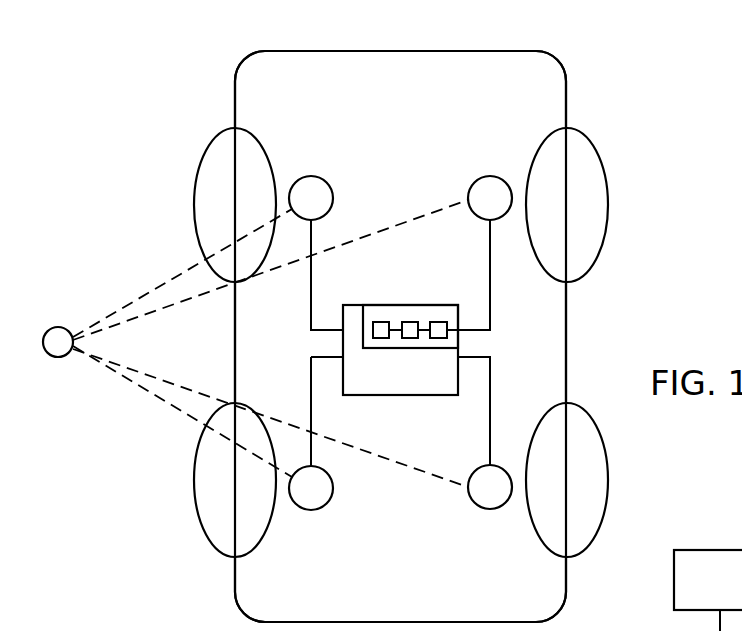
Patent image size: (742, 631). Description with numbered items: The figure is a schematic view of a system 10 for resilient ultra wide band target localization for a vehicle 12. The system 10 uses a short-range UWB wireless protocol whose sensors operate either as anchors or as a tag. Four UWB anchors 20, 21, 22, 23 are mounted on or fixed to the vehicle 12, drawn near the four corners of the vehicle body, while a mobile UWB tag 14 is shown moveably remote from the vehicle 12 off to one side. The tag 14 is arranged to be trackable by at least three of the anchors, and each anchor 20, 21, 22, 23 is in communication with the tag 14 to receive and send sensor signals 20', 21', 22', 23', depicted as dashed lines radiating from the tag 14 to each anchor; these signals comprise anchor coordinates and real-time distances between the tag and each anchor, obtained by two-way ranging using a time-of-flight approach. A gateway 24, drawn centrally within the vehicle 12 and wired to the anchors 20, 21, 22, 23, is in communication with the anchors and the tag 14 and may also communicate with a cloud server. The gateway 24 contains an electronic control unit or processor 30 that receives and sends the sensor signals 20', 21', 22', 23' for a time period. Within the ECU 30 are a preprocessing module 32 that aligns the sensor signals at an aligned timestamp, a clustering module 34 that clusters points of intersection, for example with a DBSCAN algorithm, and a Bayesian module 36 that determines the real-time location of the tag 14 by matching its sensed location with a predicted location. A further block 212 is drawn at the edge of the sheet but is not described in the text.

The system 10 is at (152, 55).
The vehicle 12 is at (235, 110).
The mobile UWB tag 14 is at (55, 327).
The UWB anchor 20 is at (311, 198).
The UWB anchor 21 is at (490, 198).
The UWB anchor 22 is at (311, 488).
The UWB anchor 23 is at (490, 487).
The sensor signal 20' is at (182, 272).
The sensor signal 21' is at (270, 238).
The sensor signal 22' is at (182, 411).
The sensor signal 23' is at (270, 446).
The gateway 24 is at (410, 386).
The electronic control unit (ECU) or processor 30 is at (397, 305).
The preprocessing module 32 is at (385, 322).
The clustering module 34 is at (413, 322).
The Bayesian module 36 is at (458, 331).
The block 212 is at (708, 590).